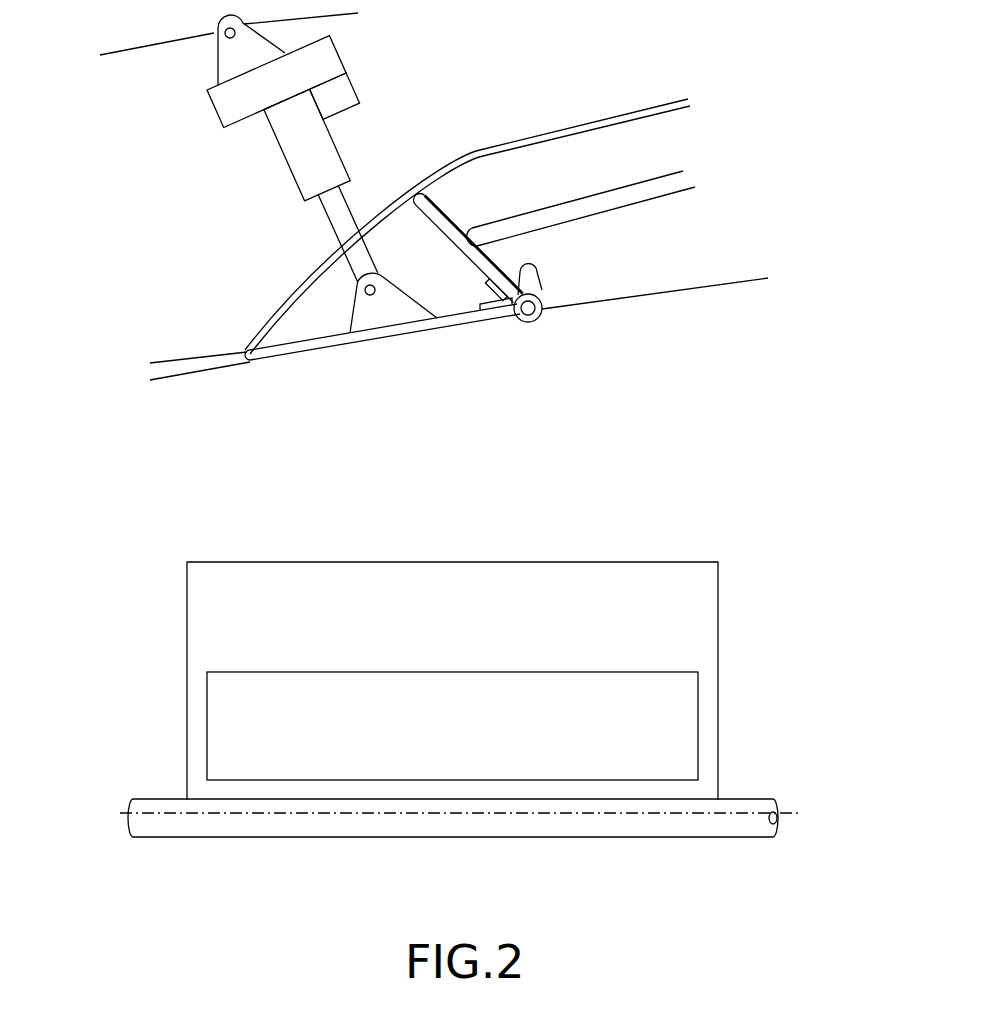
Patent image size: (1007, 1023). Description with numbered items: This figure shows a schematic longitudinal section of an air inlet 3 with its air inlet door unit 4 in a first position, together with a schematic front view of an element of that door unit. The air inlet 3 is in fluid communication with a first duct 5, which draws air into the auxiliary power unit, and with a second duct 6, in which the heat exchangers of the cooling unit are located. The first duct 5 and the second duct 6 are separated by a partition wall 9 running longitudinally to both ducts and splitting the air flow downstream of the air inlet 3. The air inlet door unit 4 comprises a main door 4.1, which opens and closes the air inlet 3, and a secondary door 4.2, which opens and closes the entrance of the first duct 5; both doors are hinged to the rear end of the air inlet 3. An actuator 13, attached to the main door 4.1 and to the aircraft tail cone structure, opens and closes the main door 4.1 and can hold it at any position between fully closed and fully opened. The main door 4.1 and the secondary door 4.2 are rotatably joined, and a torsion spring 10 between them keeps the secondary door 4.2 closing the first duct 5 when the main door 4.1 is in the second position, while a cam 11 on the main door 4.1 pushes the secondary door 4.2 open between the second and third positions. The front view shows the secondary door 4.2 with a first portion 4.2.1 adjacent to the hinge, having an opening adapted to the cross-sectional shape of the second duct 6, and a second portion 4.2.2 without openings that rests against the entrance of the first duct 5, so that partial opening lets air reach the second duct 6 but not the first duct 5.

The air inlet 3 is at (293, 397).
The air inlet door unit 4 is at (498, 398).
The main door 4.1 is at (358, 340).
The secondary door 4.2 is at (443, 223).
The first portion 4.2.1 is at (467, 693).
The second portion 4.2.2 is at (347, 580).
The first duct 5 is at (633, 148).
The second duct 6 is at (683, 263).
The partition wall 9 is at (517, 225).
The torsion spring 10 is at (528, 323).
The cam 11 is at (533, 267).
The actuator 13 is at (335, 247).